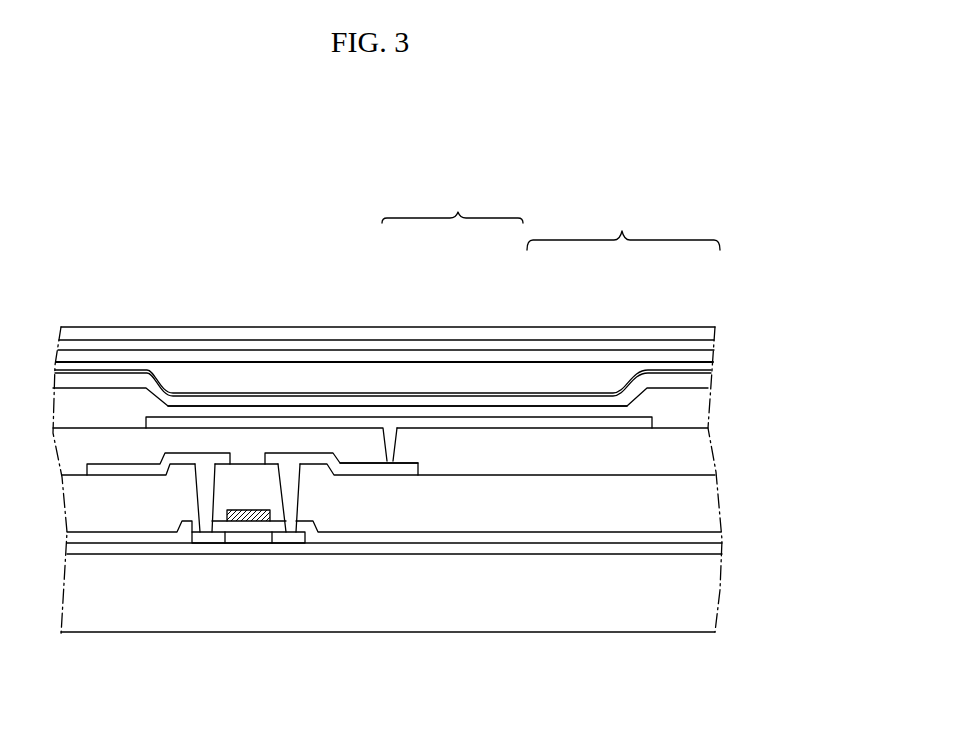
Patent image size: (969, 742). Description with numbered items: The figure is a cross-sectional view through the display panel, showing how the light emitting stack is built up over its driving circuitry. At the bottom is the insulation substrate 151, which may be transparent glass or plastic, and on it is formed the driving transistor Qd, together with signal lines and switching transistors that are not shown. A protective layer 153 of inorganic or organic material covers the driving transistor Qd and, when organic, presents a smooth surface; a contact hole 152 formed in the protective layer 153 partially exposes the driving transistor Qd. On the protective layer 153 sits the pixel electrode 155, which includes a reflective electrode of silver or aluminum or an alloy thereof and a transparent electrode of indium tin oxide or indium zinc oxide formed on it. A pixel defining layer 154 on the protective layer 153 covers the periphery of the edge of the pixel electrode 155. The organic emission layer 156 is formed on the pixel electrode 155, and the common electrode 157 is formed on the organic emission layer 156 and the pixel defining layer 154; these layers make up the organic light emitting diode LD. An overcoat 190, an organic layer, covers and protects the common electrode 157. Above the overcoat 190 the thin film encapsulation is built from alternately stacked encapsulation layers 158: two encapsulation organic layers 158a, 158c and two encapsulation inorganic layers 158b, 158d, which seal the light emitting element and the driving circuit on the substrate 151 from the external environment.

The insulation substrate 151 is at (487, 617).
The contact hole 152 is at (398, 446).
The protective layer 153 is at (578, 460).
The pixel defining layer 154 is at (681, 415).
The pixel electrode 155 is at (428, 423).
The organic emission layer 156 is at (458, 412).
The common electrode 157 is at (492, 400).
The encapsulation layers 158 is at (623, 227).
The encapsulation organic layer 158a is at (551, 366).
The encapsulation inorganic layer 158b is at (594, 356).
The encapsulation organic layer 158c is at (640, 344).
The encapsulation inorganic layer 158d is at (688, 333).
The overcoat 190 is at (123, 373).
The organic light emitting diode LD is at (452, 203).
The driving transistor Qd is at (110, 453).